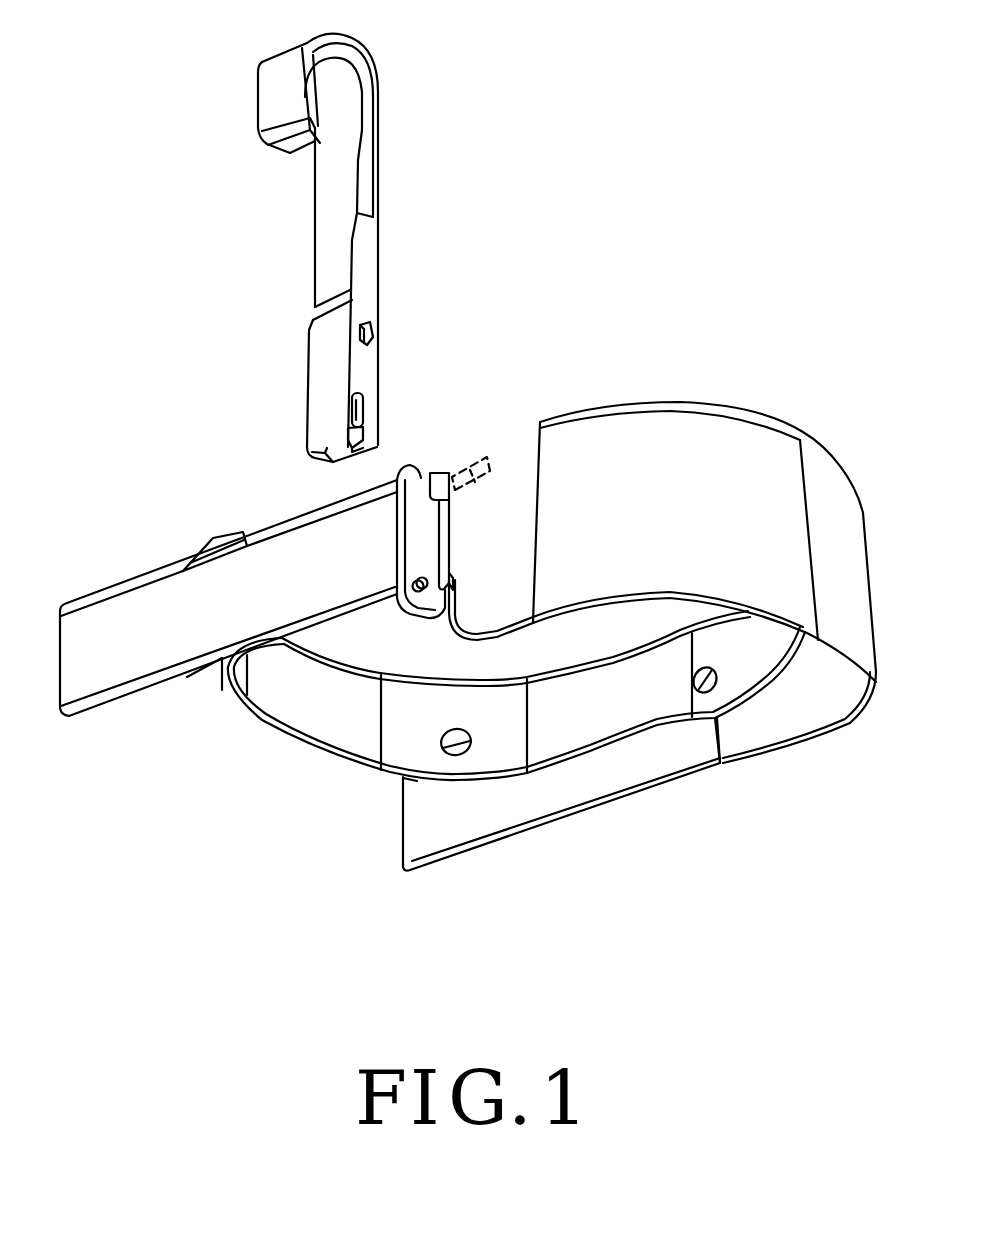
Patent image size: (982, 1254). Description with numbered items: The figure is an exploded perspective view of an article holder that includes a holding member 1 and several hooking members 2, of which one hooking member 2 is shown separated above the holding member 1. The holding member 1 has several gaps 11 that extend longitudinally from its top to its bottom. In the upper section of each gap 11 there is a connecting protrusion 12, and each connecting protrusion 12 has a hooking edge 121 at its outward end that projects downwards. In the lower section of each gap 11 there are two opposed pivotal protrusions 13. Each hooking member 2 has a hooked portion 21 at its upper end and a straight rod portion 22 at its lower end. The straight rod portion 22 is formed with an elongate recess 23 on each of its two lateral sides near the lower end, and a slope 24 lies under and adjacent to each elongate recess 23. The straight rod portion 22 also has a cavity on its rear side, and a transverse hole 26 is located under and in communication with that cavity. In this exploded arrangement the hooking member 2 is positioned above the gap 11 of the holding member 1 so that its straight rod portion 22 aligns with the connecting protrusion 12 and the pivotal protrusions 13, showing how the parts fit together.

The holding member 1 is at (872, 482).
The gap 11 is at (419, 535).
The connecting protrusion 12 is at (492, 465).
The hooking edge 121 is at (442, 473).
The pivotal protrusion 13 is at (413, 592).
The hooking member 2 is at (395, 167).
The hooked portion 21 is at (282, 77).
The straight rod portion 22 is at (380, 283).
The elongate recess 23 is at (362, 393).
The slope 24 is at (358, 437).
The transverse hole 26 is at (377, 335).